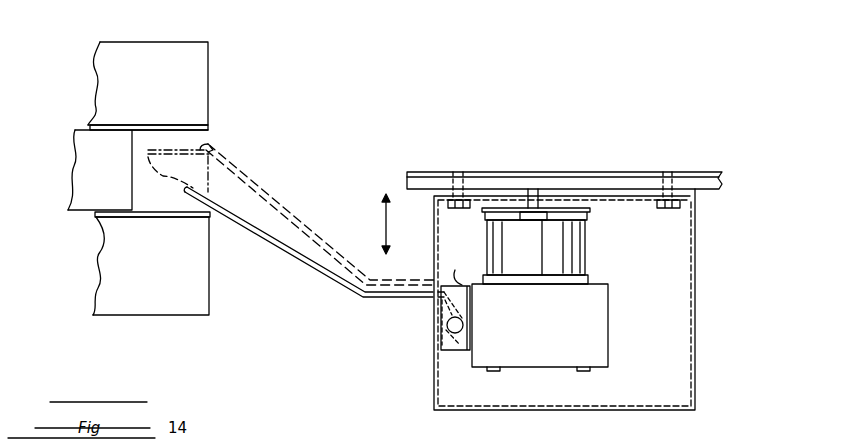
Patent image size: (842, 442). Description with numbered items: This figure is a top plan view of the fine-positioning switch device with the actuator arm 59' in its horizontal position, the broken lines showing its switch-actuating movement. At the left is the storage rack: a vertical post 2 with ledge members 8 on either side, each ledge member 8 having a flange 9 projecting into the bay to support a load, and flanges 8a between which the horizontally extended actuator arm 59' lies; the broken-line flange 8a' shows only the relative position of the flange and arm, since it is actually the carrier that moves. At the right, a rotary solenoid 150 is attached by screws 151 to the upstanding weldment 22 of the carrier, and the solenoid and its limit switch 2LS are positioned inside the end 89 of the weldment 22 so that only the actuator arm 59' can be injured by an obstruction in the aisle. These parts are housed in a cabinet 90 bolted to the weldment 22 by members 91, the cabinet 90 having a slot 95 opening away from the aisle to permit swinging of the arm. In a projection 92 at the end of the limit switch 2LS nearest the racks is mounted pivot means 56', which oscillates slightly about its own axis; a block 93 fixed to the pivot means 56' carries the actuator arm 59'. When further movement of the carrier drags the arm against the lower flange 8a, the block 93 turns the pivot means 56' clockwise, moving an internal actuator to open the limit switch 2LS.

The vertical post 2 is at (72, 176).
The ledge member 8 is at (220, 97).
The flange 8a is at (150, 174).
The flange 8a' is at (202, 156).
The flange 9 is at (150, 68).
The weldment 22 is at (712, 176).
The pivot means 56' is at (412, 332).
The actuator arm 59' is at (310, 222).
The end of weldment 89 is at (405, 178).
The cabinet 90 is at (695, 290).
The members 91 is at (460, 210).
The projection 92 is at (452, 352).
The block 93 is at (448, 286).
The slot 95 is at (437, 312).
The rotary solenoid 150 is at (557, 240).
The screws 151 is at (545, 192).
The limit switch 2LS is at (496, 329).